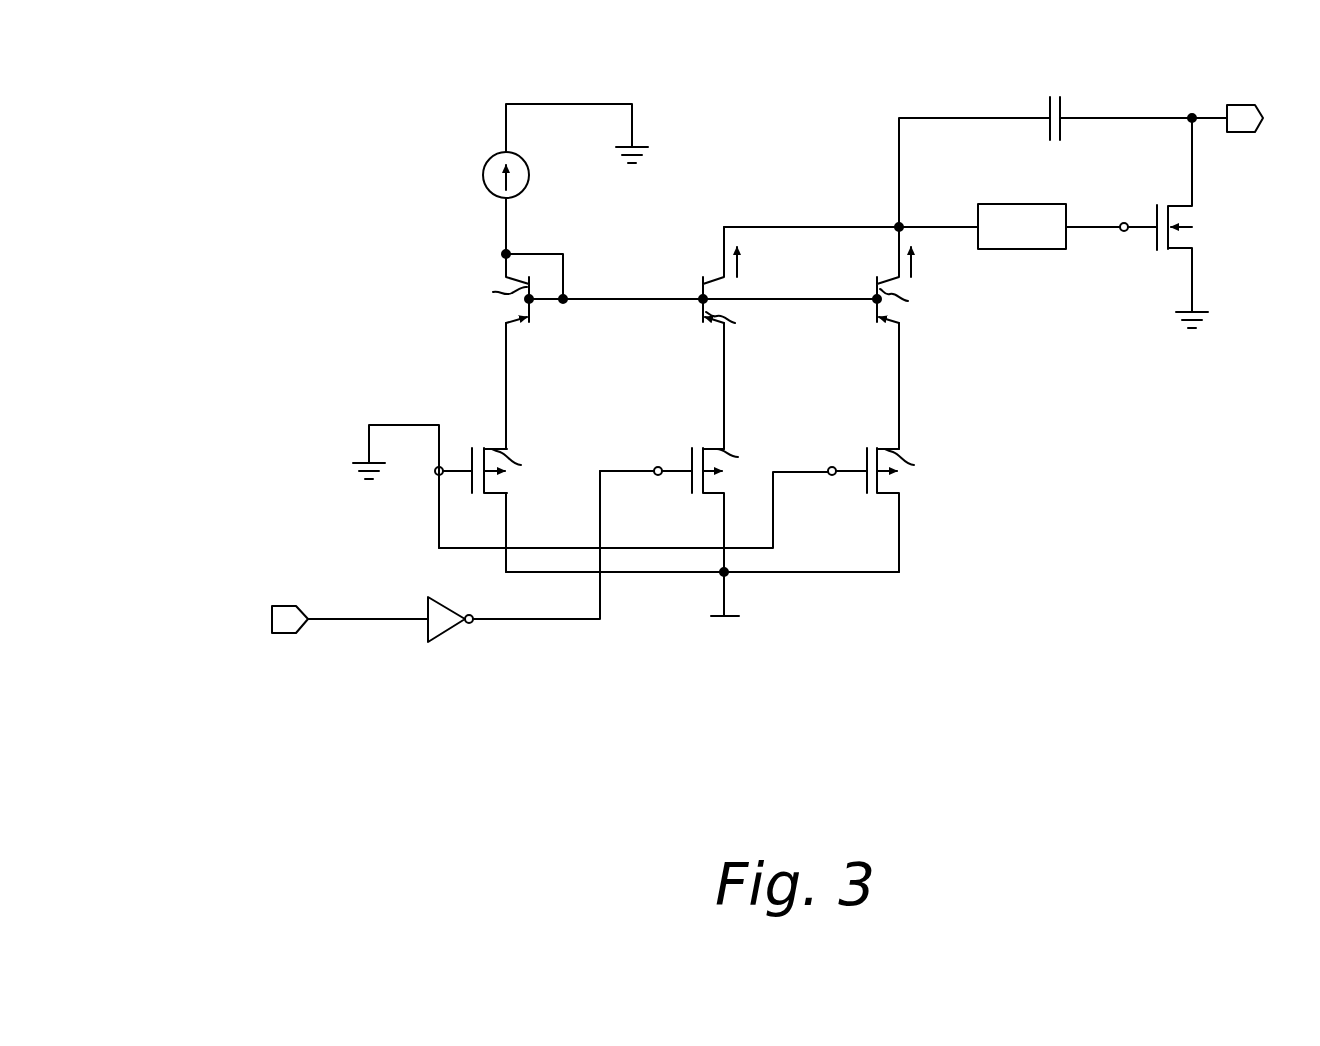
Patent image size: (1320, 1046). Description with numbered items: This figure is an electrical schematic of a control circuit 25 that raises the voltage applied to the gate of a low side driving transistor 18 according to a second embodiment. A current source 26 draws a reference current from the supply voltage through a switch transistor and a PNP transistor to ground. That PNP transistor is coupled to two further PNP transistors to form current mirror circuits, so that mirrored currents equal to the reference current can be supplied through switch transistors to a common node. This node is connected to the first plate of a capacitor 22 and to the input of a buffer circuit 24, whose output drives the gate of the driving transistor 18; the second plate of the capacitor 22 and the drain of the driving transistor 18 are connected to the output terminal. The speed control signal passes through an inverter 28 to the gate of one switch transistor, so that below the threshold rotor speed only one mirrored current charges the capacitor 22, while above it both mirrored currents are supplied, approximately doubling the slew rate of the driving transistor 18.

The driving transistor 18 is at (1188, 206).
The capacitor 22 is at (1063, 106).
The buffer circuit 24 is at (1022, 250).
The control circuit 25 is at (1093, 506).
The current source 26 is at (484, 175).
The inverter 28 is at (445, 630).